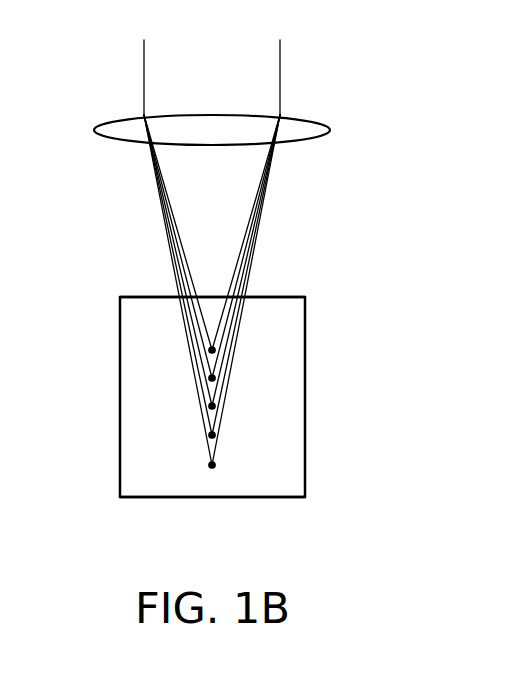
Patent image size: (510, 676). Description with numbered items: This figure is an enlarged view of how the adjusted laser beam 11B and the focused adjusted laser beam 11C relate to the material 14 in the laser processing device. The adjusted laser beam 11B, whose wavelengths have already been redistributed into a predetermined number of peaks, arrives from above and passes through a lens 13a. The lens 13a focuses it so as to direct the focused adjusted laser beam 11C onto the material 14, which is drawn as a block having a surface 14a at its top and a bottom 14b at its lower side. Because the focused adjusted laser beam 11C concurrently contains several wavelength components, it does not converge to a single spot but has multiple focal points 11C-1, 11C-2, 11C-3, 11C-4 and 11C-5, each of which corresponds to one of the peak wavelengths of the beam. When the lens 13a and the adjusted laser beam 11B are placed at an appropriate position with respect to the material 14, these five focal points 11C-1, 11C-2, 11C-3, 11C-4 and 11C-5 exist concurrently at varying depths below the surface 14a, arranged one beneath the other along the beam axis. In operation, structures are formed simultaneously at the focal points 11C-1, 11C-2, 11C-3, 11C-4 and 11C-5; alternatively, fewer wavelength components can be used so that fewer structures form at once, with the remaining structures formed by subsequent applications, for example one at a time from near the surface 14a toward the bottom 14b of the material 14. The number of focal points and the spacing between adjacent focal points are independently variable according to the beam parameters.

The adjusted laser beam 11B is at (245, 65).
The lens 13a is at (310, 119).
The focused adjusted laser beam 11C is at (237, 185).
The material 14 is at (138, 404).
The surface 14a is at (270, 297).
The bottom 14b is at (233, 497).
The focal point 11C-1 is at (212, 350).
The focal point 11C-2 is at (212, 378).
The focal point 11C-3 is at (212, 406).
The focal point 11C-4 is at (212, 435).
The focal point 11C-5 is at (212, 465).